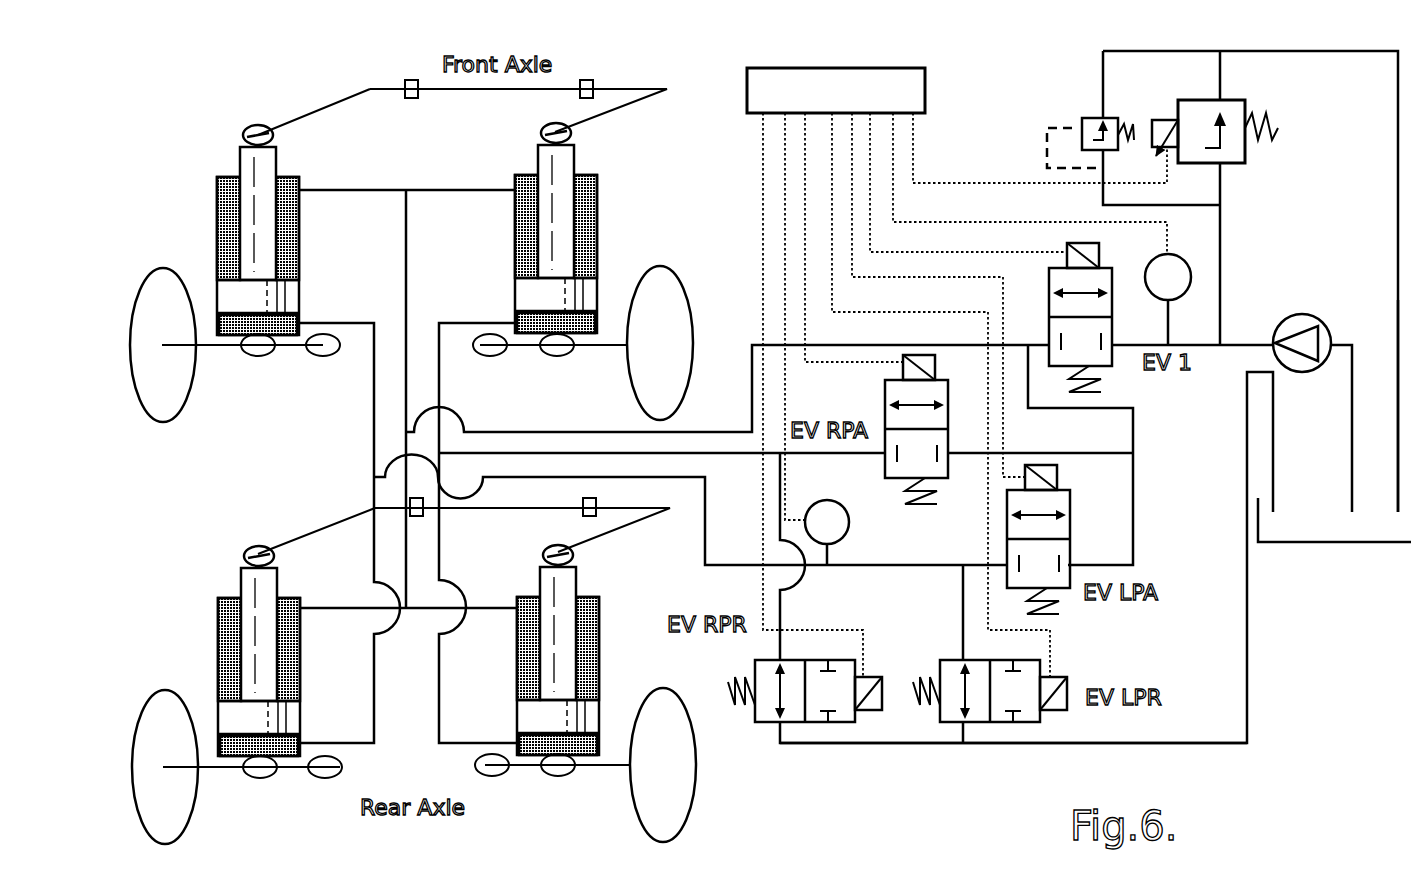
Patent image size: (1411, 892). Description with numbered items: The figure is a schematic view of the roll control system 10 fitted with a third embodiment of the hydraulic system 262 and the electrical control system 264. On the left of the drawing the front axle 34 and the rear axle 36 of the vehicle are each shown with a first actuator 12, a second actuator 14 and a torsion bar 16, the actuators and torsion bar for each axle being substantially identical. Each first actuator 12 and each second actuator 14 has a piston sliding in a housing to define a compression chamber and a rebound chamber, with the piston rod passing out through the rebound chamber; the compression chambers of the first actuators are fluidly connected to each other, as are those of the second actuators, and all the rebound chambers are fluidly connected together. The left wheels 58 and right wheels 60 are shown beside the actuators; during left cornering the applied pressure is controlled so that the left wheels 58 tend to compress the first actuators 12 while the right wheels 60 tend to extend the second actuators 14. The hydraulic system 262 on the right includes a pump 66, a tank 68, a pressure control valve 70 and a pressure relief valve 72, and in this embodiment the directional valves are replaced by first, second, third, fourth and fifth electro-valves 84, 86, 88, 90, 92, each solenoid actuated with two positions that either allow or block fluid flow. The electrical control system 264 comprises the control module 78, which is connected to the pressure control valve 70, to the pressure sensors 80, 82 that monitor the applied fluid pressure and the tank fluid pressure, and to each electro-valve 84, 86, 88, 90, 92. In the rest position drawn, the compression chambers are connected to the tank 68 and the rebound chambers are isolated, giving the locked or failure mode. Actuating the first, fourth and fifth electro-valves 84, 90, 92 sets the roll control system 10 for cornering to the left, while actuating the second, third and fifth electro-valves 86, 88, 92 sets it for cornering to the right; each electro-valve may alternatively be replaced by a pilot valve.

The roll control system 10 is at (861, 767).
The first actuator 12 is at (209, 222).
The second actuator 14 is at (605, 237).
The torsion bar 16 is at (480, 90).
The front axle 34 is at (297, 362).
The rear axle 36 is at (297, 784).
The left wheels 58 is at (178, 395).
The right wheels 60 is at (642, 380).
The pump 66 is at (1302, 314).
The tank 68 is at (1338, 530).
The pressure control valve 70 is at (1240, 165).
The pressure relief valve 72 is at (1097, 115).
The control module 78 is at (925, 90).
The pressure sensor 80 is at (1180, 300).
The pressure sensor 82 is at (849, 522).
The first electro-valve 84 is at (765, 723).
The second electro-valve 86 is at (1040, 715).
The third electro-valve 88 is at (1070, 522).
The fourth electro-valve 90 is at (948, 420).
The fifth electro-valve 92 is at (1115, 282).
The hydraulic system 262 is at (1280, 645).
The electrical control system 264 is at (747, 210).